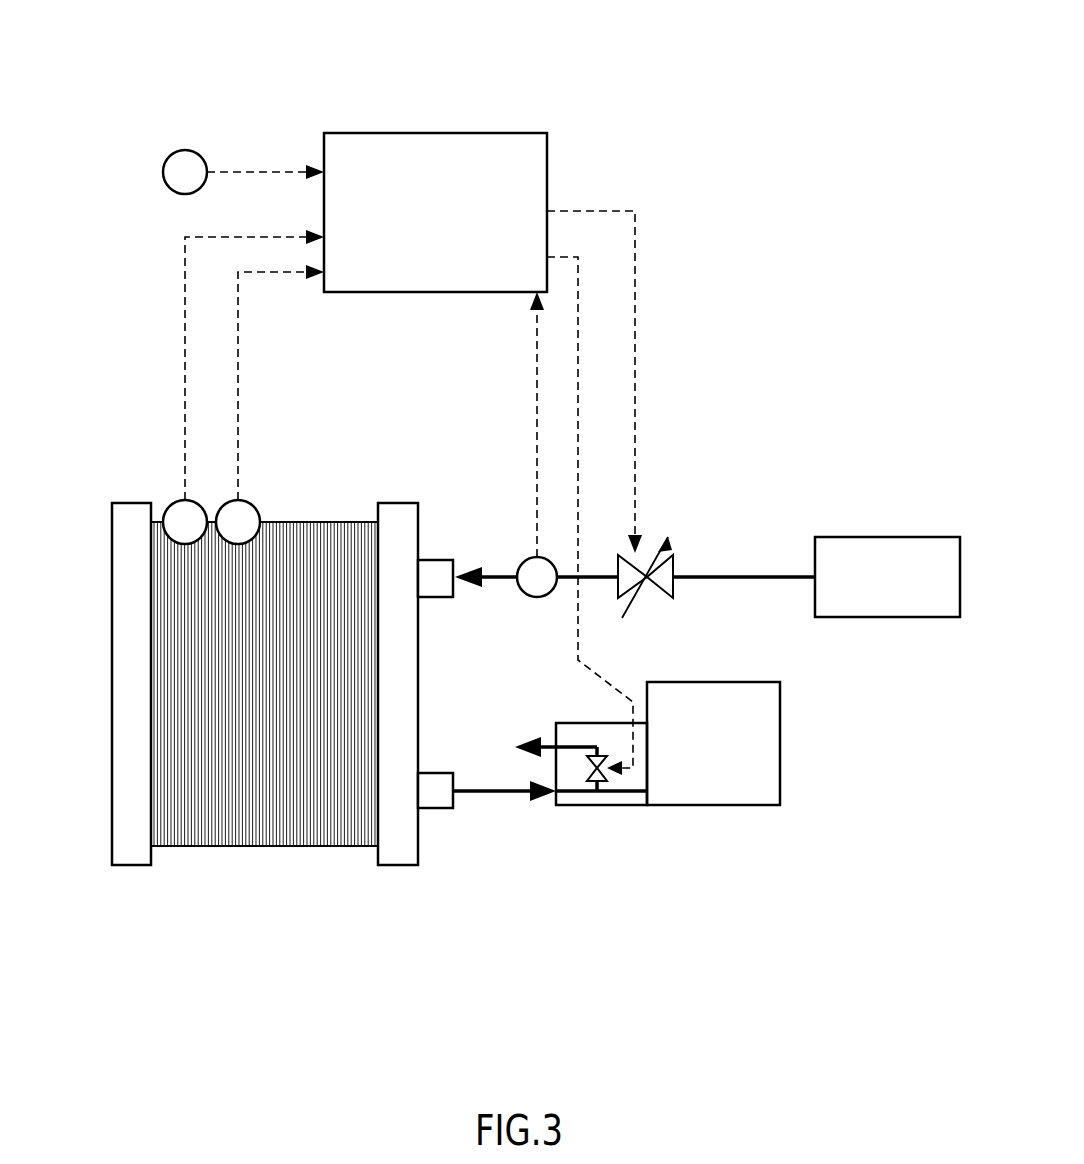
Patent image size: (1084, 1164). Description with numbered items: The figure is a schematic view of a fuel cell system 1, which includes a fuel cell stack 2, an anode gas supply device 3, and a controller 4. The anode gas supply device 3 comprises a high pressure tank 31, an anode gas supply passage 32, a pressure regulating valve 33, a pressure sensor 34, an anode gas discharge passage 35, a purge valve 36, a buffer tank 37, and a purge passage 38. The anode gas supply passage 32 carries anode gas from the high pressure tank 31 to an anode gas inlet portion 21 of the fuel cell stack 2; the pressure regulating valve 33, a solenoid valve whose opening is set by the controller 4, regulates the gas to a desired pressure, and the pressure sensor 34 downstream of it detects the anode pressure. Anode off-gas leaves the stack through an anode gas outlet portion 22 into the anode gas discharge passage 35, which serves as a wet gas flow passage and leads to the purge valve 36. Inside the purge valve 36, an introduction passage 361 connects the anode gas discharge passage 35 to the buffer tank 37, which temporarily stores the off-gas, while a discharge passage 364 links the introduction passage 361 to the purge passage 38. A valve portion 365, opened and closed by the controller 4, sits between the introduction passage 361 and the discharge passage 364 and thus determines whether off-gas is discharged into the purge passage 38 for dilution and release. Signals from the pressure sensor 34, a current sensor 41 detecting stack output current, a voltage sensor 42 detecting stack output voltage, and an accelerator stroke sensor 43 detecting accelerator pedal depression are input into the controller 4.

The fuel cell system 1 is at (93, 105).
The fuel cell stack 2 is at (230, 848).
The anode gas inlet portion 21 is at (432, 560).
The anode gas outlet portion 22 is at (435, 813).
The anode gas supply device 3 is at (818, 737).
The high pressure tank 31 is at (880, 537).
The anode gas supply passage 32 is at (745, 580).
The pressure regulating valve 33 is at (618, 560).
The pressure sensor 34 is at (517, 565).
The anode gas discharge passage 35 is at (483, 786).
The purge valve 36 is at (625, 808).
The introduction passage 361 is at (567, 805).
The discharge passage 364 is at (582, 740).
The valve portion 365 is at (588, 805).
The buffer tank 37 is at (743, 810).
The purge passage 38 is at (547, 738).
The controller 4 is at (472, 133).
The current sensor 41 is at (250, 502).
The voltage sensor 42 is at (172, 502).
The accelerator stroke sensor 43 is at (187, 150).